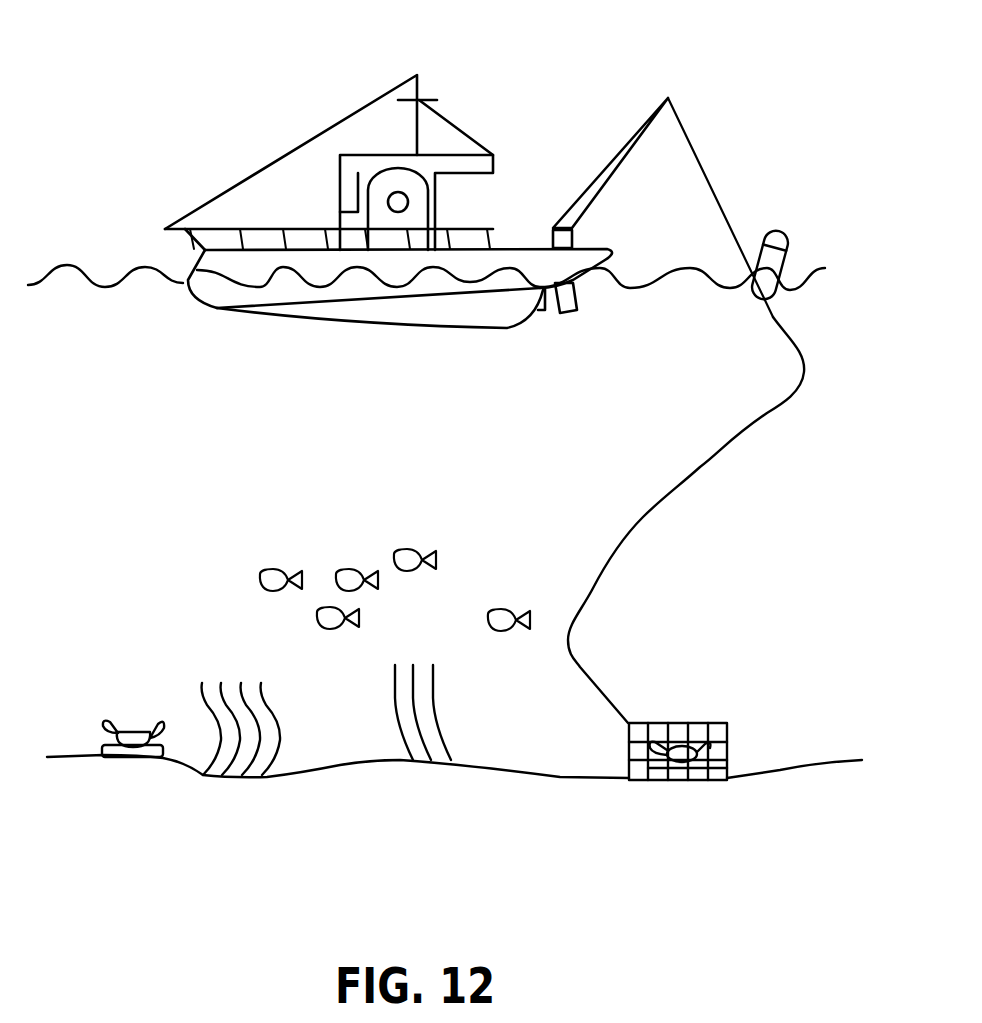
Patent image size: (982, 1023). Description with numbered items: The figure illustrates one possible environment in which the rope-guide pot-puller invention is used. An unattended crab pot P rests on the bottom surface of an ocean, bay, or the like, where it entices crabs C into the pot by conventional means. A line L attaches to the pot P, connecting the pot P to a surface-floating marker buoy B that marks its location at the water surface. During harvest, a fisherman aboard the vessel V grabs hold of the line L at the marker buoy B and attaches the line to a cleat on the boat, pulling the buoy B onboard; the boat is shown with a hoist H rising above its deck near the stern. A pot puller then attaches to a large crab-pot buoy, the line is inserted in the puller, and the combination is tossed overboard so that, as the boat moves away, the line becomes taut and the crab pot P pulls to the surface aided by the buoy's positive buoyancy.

The vessel V is at (222, 133).
The hoist (A-frame davit) H is at (591, 152).
The marker buoy B is at (788, 226).
The line L is at (629, 509).
The crab pot P is at (687, 694).
The crabs C is at (103, 701).